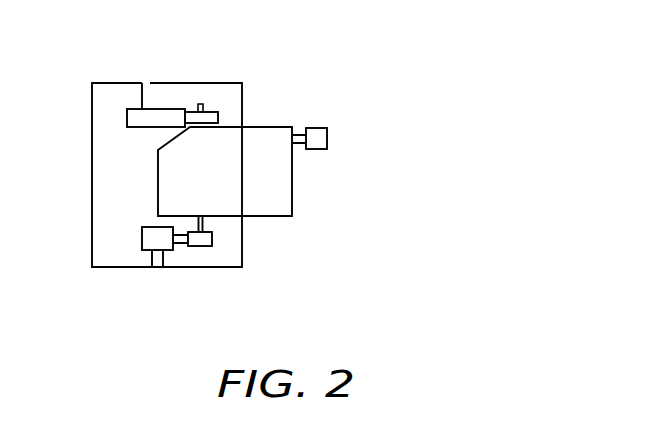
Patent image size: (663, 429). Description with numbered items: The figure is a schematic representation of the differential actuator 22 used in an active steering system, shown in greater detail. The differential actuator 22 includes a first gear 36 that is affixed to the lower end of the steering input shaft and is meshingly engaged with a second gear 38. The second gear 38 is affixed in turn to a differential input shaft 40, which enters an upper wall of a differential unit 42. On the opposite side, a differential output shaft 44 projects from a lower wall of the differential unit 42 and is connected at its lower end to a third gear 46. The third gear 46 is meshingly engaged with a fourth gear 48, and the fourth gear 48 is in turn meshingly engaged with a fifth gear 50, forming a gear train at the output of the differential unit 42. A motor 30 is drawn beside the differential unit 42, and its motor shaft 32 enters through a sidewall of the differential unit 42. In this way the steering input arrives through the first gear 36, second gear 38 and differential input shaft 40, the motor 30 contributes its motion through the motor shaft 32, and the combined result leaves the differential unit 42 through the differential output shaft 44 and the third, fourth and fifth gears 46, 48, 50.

The differential actuator 22 is at (432, 160).
The motor 30 is at (327, 136).
The motor shaft 32 is at (298, 134).
The first gear 36 is at (160, 109).
The second gear 38 is at (215, 112).
The differential input shaft 40 is at (200, 104).
The differential unit 42 is at (235, 121).
The differential output shaft 44 is at (203, 222).
The third gear 46 is at (208, 247).
The fourth gear 48 is at (180, 248).
The fifth gear 50 is at (142, 245).